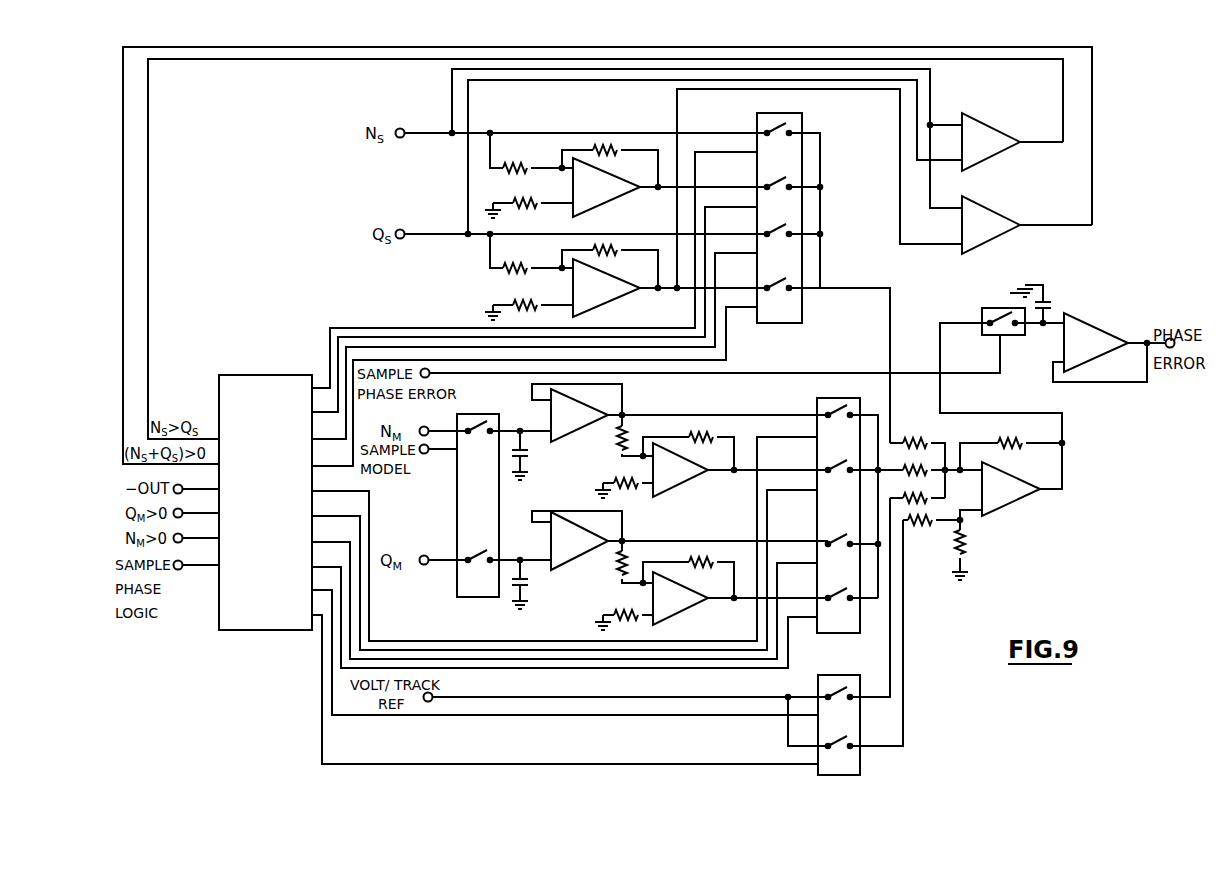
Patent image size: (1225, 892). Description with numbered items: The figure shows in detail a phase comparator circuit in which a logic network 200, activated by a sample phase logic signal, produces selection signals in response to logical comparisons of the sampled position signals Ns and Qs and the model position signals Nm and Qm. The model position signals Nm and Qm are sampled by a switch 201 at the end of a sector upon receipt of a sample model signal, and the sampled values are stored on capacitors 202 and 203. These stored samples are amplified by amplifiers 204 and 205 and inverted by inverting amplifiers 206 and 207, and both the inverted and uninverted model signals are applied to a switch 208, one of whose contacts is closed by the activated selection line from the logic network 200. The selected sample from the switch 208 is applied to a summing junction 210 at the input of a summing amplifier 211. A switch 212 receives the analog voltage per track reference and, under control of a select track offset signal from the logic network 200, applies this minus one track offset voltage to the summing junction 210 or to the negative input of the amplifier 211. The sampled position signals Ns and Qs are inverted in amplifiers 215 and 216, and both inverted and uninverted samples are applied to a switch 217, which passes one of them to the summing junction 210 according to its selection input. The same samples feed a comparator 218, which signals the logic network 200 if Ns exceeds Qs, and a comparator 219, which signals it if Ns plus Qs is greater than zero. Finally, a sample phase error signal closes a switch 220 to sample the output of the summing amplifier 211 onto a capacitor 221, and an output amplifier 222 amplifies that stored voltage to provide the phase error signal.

The logic network 200 is at (272, 375).
The switch 201 is at (457, 532).
The capacitor 202 is at (528, 460).
The capacitor 203 is at (528, 589).
The amplifier 204 is at (585, 436).
The amplifier 205 is at (585, 562).
The inverting amplifier 206 is at (680, 487).
The inverting amplifier 207 is at (680, 615).
The switch 208 is at (836, 633).
The summing junction 210 is at (948, 476).
The summing amplifier 211 is at (1012, 504).
The switch 212 is at (862, 772).
The amplifier 215 is at (608, 200).
The amplifier 216 is at (608, 301).
The switch 217 is at (785, 323).
The comparator 218 is at (998, 154).
The comparator 219 is at (1000, 237).
The switch 220 is at (994, 308).
The capacitor 221 is at (1050, 304).
The output amplifier 222 is at (1080, 334).